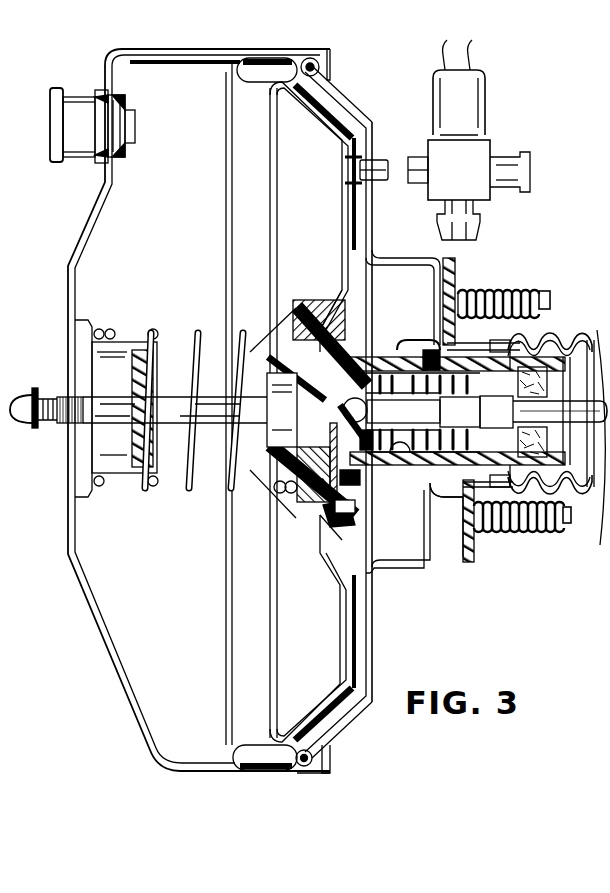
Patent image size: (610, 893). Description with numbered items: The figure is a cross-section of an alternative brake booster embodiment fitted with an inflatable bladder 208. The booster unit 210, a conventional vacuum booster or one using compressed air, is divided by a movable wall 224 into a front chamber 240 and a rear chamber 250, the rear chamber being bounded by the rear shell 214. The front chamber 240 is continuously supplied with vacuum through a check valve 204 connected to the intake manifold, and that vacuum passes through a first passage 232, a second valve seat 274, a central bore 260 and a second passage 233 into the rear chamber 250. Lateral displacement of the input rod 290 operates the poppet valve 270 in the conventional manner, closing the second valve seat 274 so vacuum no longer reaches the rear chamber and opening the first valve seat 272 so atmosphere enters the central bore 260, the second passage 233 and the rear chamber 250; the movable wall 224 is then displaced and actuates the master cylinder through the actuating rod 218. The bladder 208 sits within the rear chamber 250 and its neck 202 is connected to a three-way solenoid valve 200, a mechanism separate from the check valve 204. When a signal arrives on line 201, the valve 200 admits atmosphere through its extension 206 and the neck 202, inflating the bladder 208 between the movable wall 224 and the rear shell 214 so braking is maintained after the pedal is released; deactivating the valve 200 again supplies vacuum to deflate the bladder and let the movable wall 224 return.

The valve 200 is at (485, 100).
The line 201 is at (443, 47).
The neck 202 is at (388, 158).
The check valve 204 is at (130, 135).
The extension 206 is at (417, 173).
The inflatable bladder 208 is at (325, 96).
The booster unit 210 is at (375, 252).
The rear shell 214 is at (352, 104).
The actuating rod 218 is at (139, 408).
The movable wall 224 is at (340, 263).
The first passage 232 is at (308, 413).
The second passage 233 is at (360, 482).
The front chamber 240 is at (190, 253).
The rear chamber 250 is at (363, 555).
The central bore 260 is at (356, 337).
The poppet valve 270 is at (393, 472).
The first valve seat 272 is at (446, 300).
The second valve seat 274 is at (380, 366).
The input rod 290 is at (603, 440).